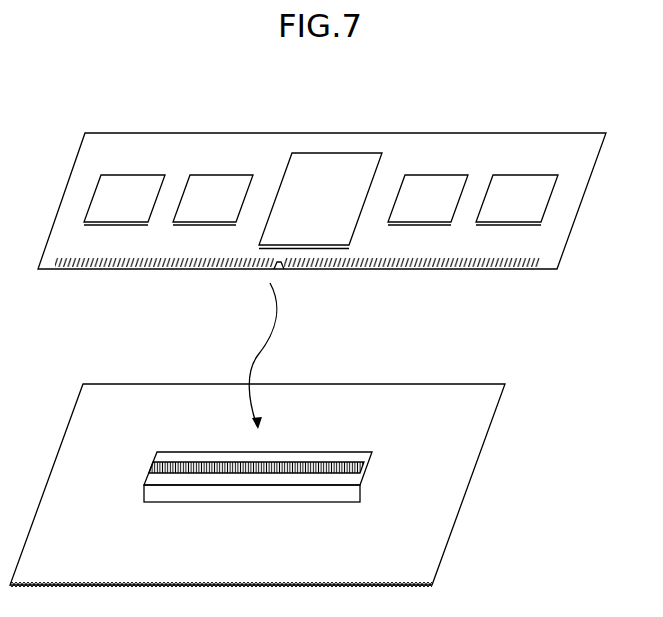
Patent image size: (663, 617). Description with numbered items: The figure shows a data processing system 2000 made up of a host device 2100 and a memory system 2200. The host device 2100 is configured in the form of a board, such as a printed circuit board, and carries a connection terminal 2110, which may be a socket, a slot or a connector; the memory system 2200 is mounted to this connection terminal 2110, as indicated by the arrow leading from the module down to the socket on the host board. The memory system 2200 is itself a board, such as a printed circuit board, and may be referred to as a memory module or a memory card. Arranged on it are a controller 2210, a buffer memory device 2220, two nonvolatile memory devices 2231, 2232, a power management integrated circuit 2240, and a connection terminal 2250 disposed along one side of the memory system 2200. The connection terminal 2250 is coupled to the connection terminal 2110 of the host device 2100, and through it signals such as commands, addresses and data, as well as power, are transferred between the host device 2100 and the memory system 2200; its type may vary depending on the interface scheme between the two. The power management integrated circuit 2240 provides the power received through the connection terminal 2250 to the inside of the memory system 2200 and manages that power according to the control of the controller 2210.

The data processing system 2000 is at (182, 101).
The host device 2100 is at (257, 485).
The connection terminal 2110 is at (375, 455).
The memory system 2200 is at (322, 201).
The controller 2210 is at (320, 201).
The buffer memory device 2220 is at (213, 200).
The nonvolatile memory device 2231 is at (428, 200).
The nonvolatile memory device 2232 is at (517, 200).
The power management integrated circuit 2240 is at (124, 200).
The connection terminal 2250 is at (74, 269).